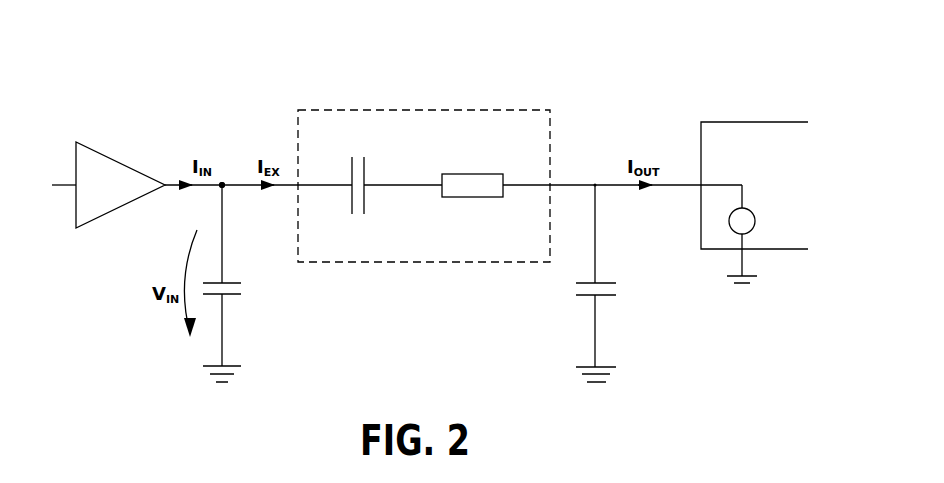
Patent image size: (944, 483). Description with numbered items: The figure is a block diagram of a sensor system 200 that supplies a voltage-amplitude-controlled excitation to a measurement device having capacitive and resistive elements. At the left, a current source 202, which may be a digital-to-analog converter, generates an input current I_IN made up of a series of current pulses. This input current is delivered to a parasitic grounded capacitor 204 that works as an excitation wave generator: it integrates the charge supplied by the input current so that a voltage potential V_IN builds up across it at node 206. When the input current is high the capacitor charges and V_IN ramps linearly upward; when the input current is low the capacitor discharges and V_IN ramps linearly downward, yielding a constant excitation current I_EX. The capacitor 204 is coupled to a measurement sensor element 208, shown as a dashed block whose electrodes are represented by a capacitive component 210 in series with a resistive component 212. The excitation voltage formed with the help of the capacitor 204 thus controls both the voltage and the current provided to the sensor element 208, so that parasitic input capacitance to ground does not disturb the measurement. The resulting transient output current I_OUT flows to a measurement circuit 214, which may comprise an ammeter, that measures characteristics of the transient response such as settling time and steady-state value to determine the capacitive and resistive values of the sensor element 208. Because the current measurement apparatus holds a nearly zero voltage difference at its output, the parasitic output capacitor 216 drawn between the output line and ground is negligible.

The sensor system 200 is at (107, 19).
The current source 202 is at (110, 157).
The parasitic grounded capacitor 204 is at (245, 304).
The node 206 is at (218, 160).
The measurement sensor element 208 is at (529, 110).
The capacitive component 210 is at (369, 153).
The resistive component 212 is at (472, 174).
The measurement circuit 214 is at (778, 122).
The parasitic output capacitor 216 is at (618, 308).